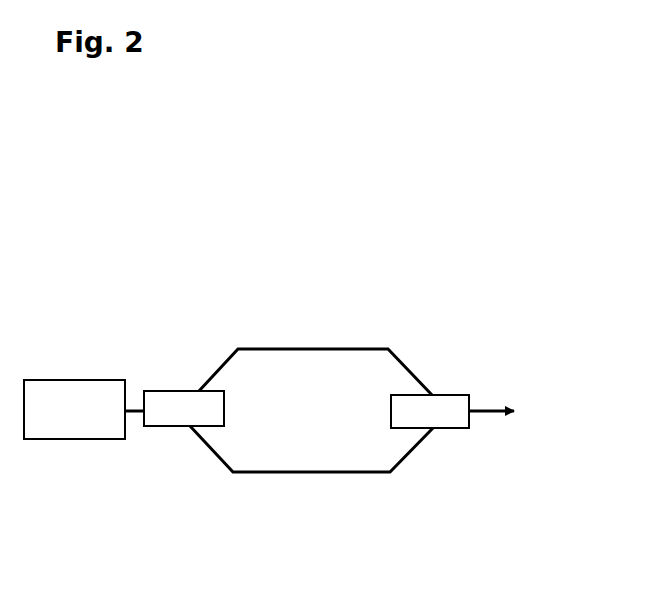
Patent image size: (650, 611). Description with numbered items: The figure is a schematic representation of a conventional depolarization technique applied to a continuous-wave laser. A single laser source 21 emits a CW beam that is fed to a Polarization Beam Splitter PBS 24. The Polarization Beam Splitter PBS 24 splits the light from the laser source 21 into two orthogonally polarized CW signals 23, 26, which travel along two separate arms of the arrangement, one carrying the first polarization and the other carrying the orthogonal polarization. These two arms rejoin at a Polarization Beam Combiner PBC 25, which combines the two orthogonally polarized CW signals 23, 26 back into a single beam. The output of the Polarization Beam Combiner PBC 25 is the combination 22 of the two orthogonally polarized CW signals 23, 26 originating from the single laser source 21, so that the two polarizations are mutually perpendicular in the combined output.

The laser source 21 is at (44, 380).
The combination 22 is at (505, 412).
The orthogonally polarized CW signal 23 is at (345, 349).
The Polarization Beam Splitter PBS 24 is at (165, 428).
The Polarization Beam Combiner PBC 25 is at (391, 420).
The orthogonally polarized CW signal 26 is at (333, 472).